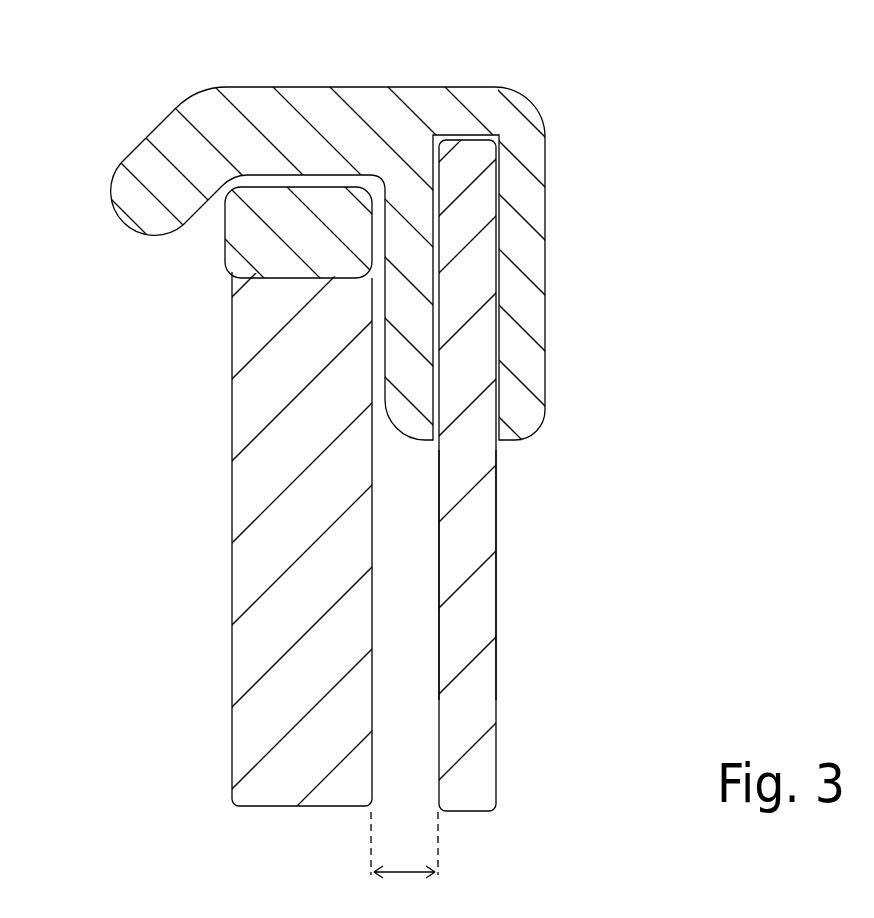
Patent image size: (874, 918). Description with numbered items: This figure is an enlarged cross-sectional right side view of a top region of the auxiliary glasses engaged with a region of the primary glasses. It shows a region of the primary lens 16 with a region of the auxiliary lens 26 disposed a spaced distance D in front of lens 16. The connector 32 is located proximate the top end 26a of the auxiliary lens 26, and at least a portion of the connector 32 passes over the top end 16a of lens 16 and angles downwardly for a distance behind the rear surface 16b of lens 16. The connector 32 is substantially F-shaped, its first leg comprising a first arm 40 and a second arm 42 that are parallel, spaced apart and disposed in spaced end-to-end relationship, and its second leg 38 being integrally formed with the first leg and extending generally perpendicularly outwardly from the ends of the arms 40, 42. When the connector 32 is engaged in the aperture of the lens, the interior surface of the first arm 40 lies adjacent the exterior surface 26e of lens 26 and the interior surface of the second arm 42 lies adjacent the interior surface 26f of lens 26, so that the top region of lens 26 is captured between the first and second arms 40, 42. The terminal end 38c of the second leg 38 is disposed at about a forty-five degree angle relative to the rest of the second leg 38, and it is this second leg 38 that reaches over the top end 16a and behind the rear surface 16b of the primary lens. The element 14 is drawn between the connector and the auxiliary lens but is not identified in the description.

The bead 14 is at (225, 242).
The lens 16 is at (437, 459).
The top end of lens 16a is at (232, 273).
The rear surface of lens 16b is at (232, 403).
The first lens 26 is at (437, 459).
The top end of lens 26a is at (467, 143).
The exterior surface 26e is at (495, 527).
The interior surface 26f is at (435, 575).
The connector 32 is at (437, 459).
The second leg 38 is at (437, 459).
The terminal end 38c is at (158, 160).
The first arm 40 is at (560, 386).
The second arm 42 is at (390, 422).
The spaced distance D is at (404, 845).